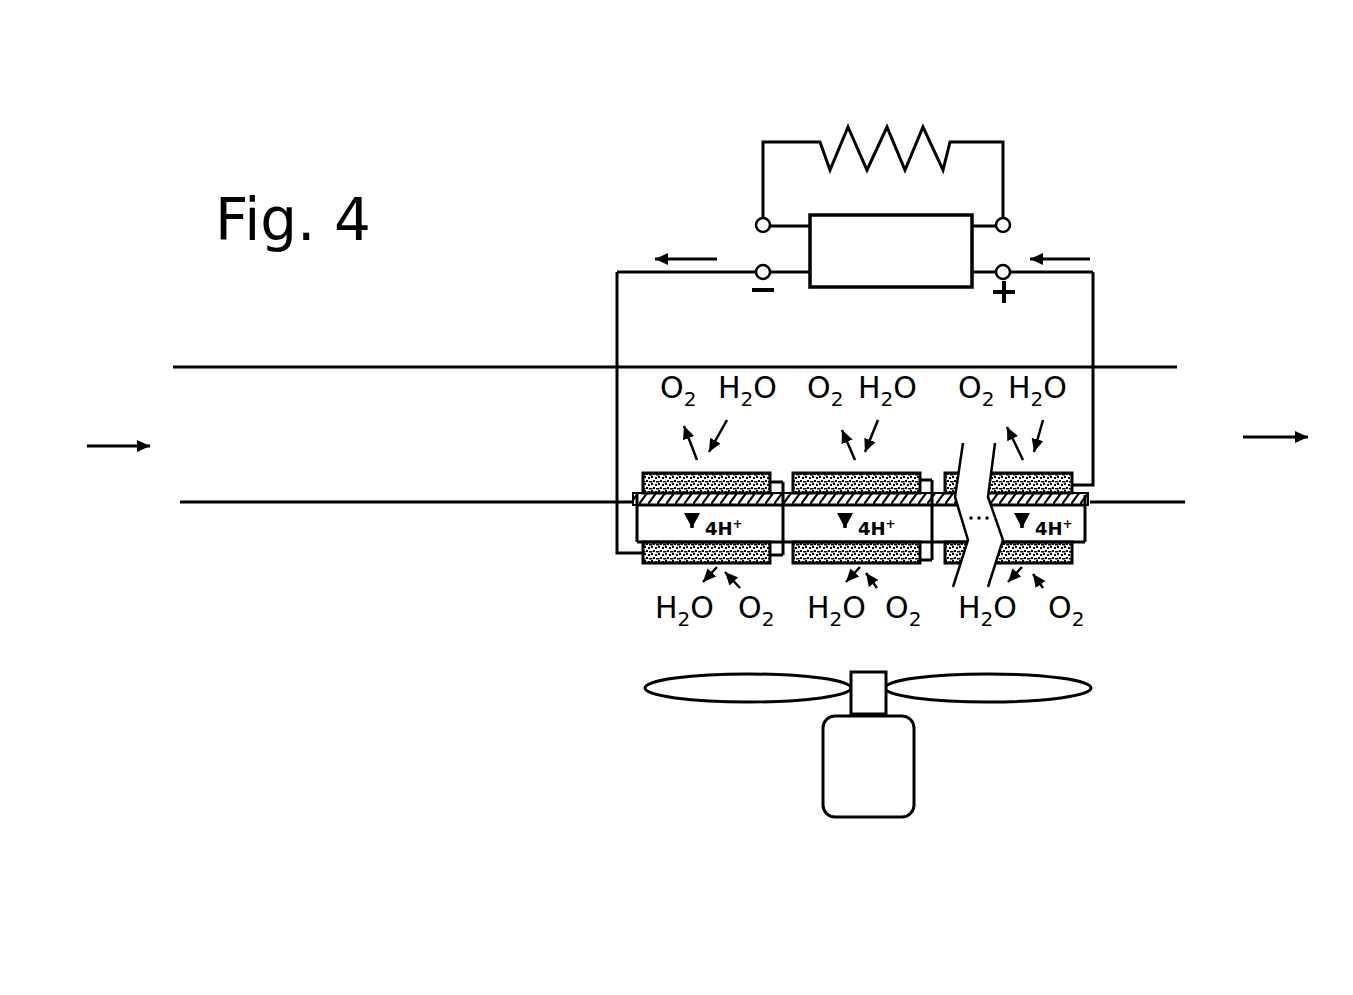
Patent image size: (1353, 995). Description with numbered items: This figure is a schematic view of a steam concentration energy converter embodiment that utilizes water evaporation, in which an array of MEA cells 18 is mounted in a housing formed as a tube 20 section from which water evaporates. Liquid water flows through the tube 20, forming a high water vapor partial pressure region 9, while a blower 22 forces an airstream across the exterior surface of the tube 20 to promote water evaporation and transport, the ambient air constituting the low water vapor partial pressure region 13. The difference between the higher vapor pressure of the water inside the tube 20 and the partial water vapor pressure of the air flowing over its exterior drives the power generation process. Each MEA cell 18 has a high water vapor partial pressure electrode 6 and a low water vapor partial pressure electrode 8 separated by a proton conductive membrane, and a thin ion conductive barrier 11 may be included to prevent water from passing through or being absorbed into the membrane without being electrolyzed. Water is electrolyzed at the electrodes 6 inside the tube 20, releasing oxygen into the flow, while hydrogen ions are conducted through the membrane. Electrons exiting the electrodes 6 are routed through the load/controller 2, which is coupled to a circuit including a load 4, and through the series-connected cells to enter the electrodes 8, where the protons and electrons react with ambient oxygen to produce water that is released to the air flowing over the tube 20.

The load/controller 2 is at (930, 287).
The load 4 is at (840, 136).
The high water vapor partial pressure electrode 6 is at (652, 471).
The low water vapor partial pressure electrode 8 is at (662, 562).
The high water vapor partial pressure region 9 is at (538, 444).
The ion conductive barrier 11 is at (1070, 506).
The low water vapor partial pressure region 13 is at (868, 671).
The Membrane Electrode Assembly cell 18 is at (624, 580).
The tube 20 is at (408, 503).
The blower 22 is at (823, 789).